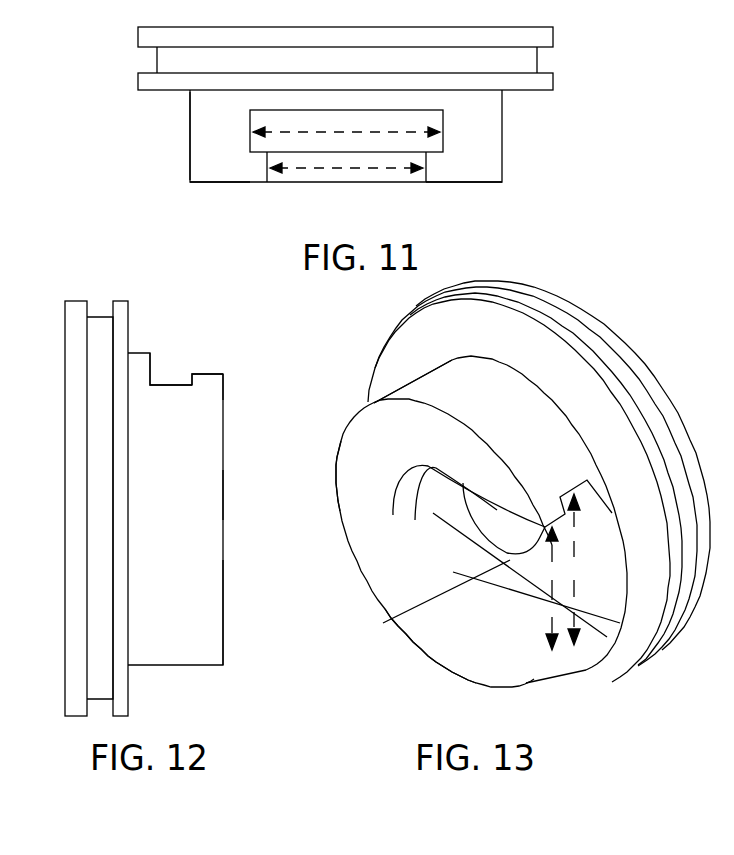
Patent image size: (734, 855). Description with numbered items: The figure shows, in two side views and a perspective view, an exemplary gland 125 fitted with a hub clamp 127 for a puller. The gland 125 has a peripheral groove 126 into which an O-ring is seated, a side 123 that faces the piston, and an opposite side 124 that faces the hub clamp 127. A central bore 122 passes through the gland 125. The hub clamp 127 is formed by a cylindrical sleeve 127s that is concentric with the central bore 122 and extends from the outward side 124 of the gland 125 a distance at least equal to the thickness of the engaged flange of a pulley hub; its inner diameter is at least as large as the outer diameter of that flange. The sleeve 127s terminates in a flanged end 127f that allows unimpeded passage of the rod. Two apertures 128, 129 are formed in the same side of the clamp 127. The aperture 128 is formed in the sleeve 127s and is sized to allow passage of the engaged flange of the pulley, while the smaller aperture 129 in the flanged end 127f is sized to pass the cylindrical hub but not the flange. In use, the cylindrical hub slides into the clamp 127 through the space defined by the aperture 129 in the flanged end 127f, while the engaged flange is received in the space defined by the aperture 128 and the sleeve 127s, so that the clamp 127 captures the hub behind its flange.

In FIG. 13, the central bore 122 is at (462, 558).
In FIG. 11, the side 123 is at (163, 26).
In FIG. 12, the side 123 is at (64, 345).
In FIG. 13, the side 123 is at (673, 430).
In FIG. 11, the opposite side 124 is at (162, 91).
In FIG. 12, the opposite side 124 is at (130, 333).
In FIG. 13, the opposite side 124 is at (388, 387).
In FIG. 11, the gland 125 is at (215, 185).
In FIG. 12, the gland 125 is at (223, 492).
In FIG. 13, the gland 125 is at (340, 500).
In FIG. 11, the peripheral groove 126 is at (540, 60).
In FIG. 12, the peripheral groove 126 is at (100, 312).
In FIG. 13, the peripheral groove 126 is at (587, 367).
In FIG. 11, the hub clamp 127 is at (497, 113).
In FIG. 12, the hub clamp 127 is at (208, 440).
In FIG. 13, the hub clamp 127 is at (385, 583).
In FIG. 11, the cylindrical sleeve 127s is at (218, 133).
In FIG. 12, the cylindrical sleeve 127s is at (172, 583).
In FIG. 13, the cylindrical sleeve 127s is at (488, 390).
In FIG. 11, the flanged end 127f is at (252, 168).
In FIG. 12, the flanged end 127f is at (205, 390).
In FIG. 13, the flanged end 127f is at (500, 624).
In FIG. 11, the aperture 128 is at (387, 132).
In FIG. 12, the aperture 128 is at (167, 385).
In FIG. 13, the aperture 128 is at (612, 513).
In FIG. 11, the aperture 129 is at (323, 168).
In FIG. 12, the aperture 129 is at (208, 373).
In FIG. 13, the aperture 129 is at (607, 672).